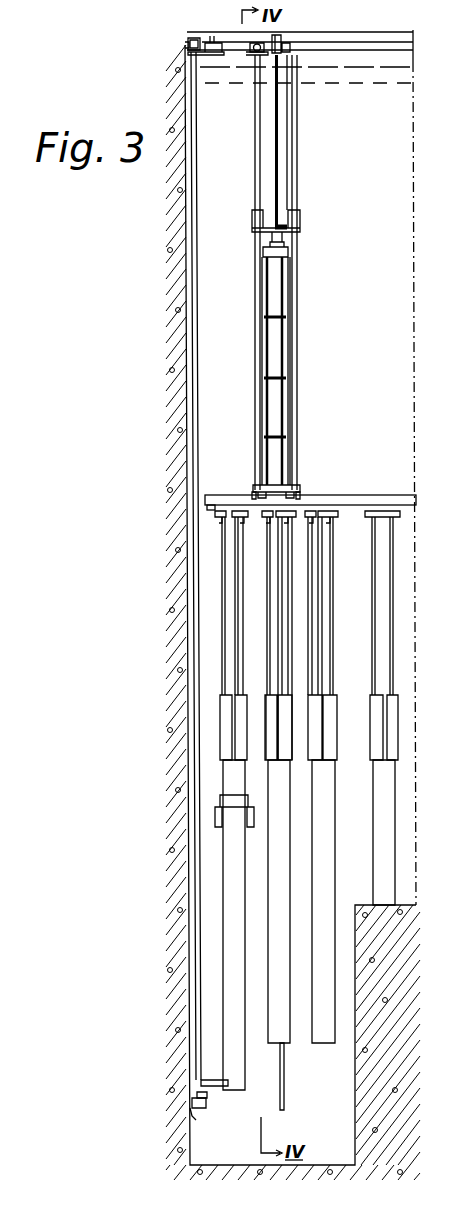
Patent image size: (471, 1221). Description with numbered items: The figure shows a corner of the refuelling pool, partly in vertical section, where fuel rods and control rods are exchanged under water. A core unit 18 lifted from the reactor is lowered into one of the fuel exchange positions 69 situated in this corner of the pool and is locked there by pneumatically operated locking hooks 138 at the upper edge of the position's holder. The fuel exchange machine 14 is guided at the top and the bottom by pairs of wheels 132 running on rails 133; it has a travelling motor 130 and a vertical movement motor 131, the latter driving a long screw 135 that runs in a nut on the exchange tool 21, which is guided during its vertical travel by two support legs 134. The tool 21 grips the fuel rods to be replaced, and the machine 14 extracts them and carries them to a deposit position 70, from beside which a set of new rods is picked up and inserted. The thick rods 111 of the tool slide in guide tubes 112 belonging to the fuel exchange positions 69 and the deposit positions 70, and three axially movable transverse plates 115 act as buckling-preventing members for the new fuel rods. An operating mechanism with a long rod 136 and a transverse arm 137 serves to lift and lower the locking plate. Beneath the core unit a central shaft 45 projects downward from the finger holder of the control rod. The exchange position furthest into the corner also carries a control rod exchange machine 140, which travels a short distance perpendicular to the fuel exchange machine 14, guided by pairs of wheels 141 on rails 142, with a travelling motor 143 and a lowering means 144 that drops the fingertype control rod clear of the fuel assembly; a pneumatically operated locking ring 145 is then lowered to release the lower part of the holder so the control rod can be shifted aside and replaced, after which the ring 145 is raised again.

The fuel exchange machine 14 is at (291, 263).
The core unit 18 is at (270, 543).
The exchange tool 21 is at (263, 251).
The central shaft 45 is at (285, 1087).
The fuel exchange position 69 is at (327, 863).
The deposit position 70 is at (383, 797).
The thick rods 111 is at (283, 357).
The guide tubes 112 is at (333, 640).
The transverse plates 115 is at (276, 432).
The travelling motor 130 is at (253, 53).
The vertical movement motor 131 is at (283, 40).
The pairs of wheels 132 is at (315, 484).
The rails 133 is at (384, 40).
The support legs 134 is at (297, 137).
The long screw 135 is at (279, 113).
The long rod 136 is at (288, 170).
The transverse arm 137 is at (290, 210).
The locking hooks 138 is at (330, 520).
The control rod exchange machine 140 is at (196, 158).
The pairs of wheels 141 is at (187, 45).
The rails 142 is at (190, 40).
The travelling motor 143 is at (212, 42).
The lowering means 144 is at (217, 1087).
The locking ring 145 is at (220, 800).